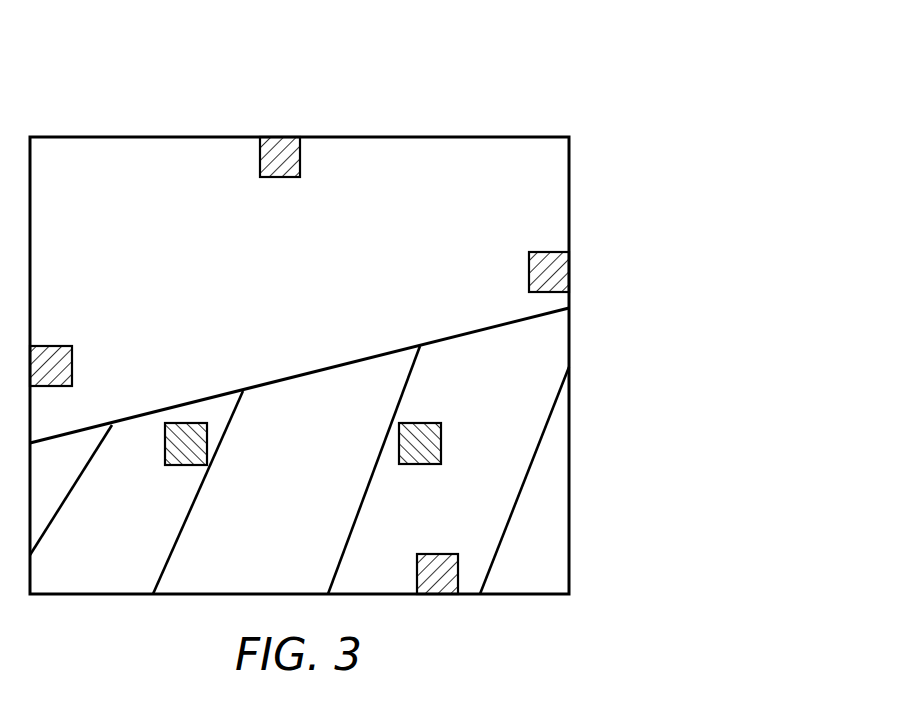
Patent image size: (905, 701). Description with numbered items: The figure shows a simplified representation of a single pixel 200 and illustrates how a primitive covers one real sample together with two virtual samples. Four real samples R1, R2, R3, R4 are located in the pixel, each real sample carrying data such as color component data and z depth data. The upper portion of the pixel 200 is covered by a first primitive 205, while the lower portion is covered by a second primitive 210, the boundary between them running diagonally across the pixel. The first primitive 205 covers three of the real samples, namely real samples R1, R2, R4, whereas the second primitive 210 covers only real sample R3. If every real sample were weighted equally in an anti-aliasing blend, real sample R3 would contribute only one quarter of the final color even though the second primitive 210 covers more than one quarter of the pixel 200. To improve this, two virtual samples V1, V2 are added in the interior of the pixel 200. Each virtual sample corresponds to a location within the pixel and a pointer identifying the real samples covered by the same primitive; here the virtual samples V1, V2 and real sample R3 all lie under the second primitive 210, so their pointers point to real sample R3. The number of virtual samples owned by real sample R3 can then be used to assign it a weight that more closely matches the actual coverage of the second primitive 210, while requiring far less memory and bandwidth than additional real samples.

The pixel 200 is at (569, 203).
The first primitive 205 is at (476, 163).
The second primitive 210 is at (522, 372).
The real sample R1 is at (280, 181).
The real sample R2 is at (528, 272).
The real sample R3 is at (437, 557).
The real sample R4 is at (71, 366).
The virtual sample V1 is at (164, 444).
The virtual sample V2 is at (439, 443).